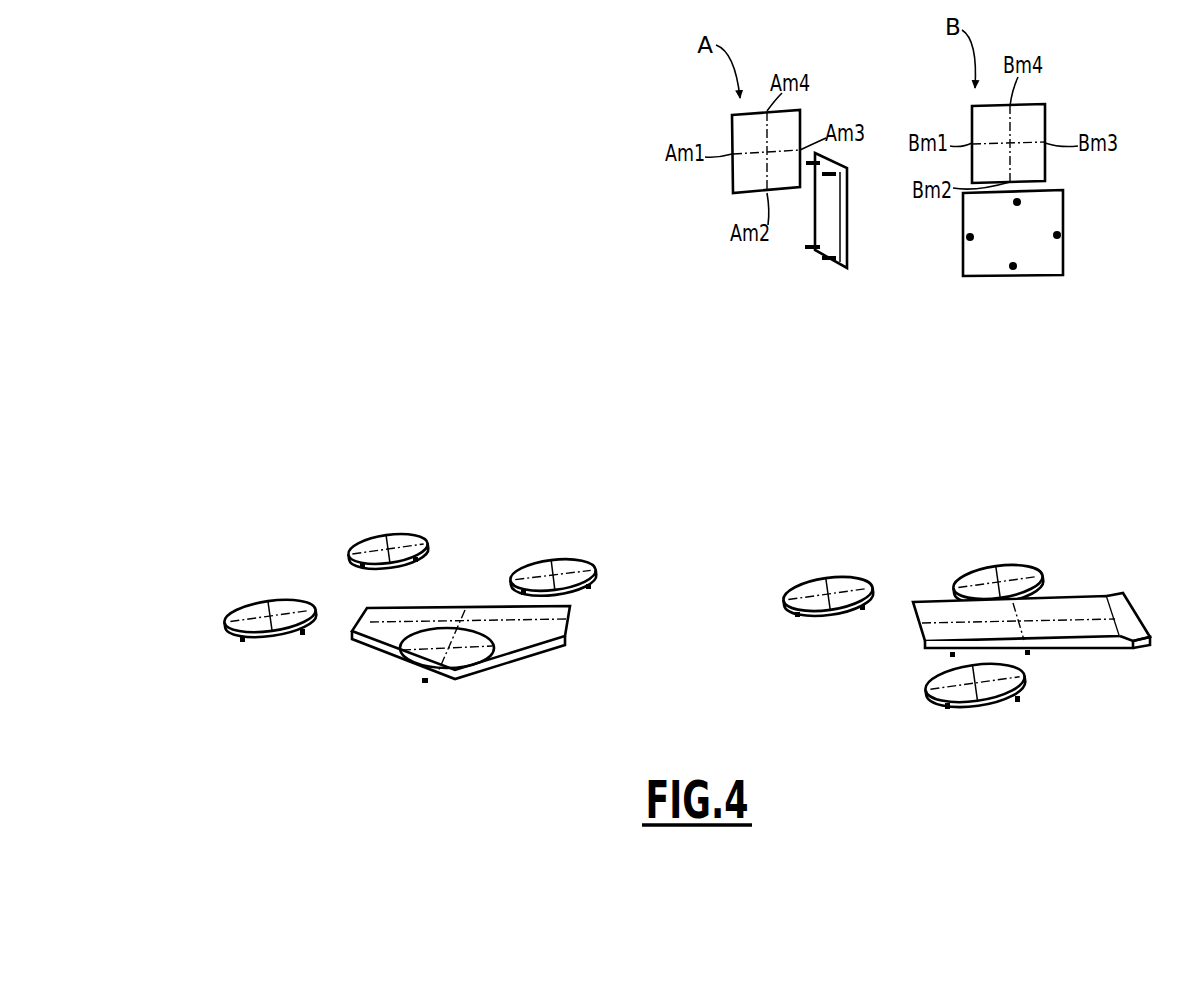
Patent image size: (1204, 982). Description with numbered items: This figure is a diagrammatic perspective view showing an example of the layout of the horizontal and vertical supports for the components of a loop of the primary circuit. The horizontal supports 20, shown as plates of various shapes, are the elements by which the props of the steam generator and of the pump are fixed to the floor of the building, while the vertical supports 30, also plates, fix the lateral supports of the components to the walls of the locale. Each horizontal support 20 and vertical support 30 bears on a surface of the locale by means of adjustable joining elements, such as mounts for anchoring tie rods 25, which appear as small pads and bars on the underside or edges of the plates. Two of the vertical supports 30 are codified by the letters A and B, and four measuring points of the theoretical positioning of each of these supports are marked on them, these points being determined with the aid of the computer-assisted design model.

The horizontal support 20 is at (370, 540).
The tie rod 25 is at (812, 243).
The vertical support 30 is at (745, 185).